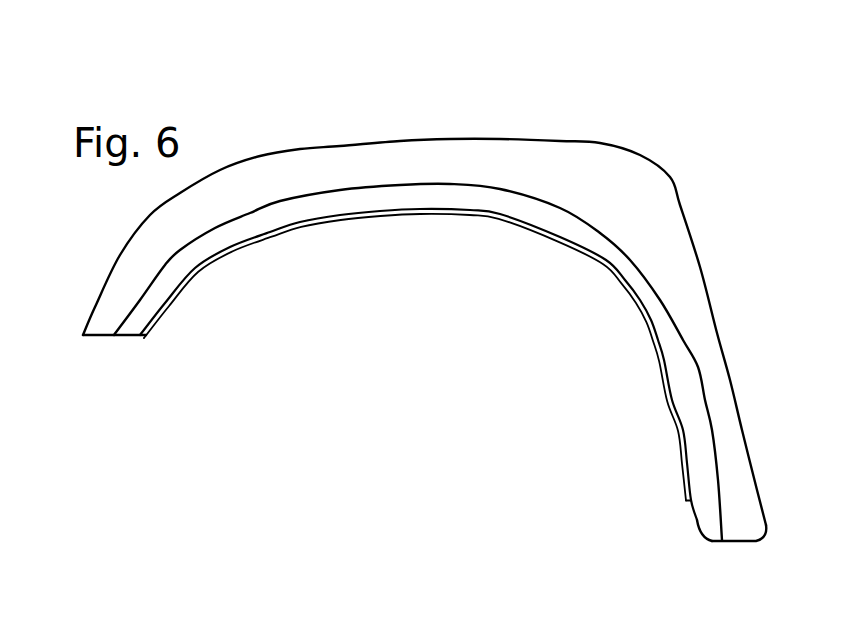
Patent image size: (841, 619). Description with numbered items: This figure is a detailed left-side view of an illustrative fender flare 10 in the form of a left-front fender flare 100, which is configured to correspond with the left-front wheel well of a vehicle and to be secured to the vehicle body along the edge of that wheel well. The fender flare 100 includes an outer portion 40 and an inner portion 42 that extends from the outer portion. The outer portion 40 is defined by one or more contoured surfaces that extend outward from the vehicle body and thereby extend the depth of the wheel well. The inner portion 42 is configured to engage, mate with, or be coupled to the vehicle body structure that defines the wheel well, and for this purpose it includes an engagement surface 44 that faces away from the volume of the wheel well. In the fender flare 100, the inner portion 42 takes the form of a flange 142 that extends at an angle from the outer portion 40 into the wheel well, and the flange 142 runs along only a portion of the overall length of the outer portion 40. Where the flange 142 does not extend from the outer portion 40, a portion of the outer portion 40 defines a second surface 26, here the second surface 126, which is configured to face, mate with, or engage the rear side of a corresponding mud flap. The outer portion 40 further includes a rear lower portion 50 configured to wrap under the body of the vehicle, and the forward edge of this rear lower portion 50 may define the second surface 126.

The fender flare 10 is at (554, 50).
The left-front fender flare 100 is at (588, 85).
The outer portion 40 is at (653, 126).
The inner portion 42 is at (435, 217).
The flange 142 is at (337, 226).
The engagement surface 44 is at (682, 407).
The second surface 126 is at (696, 510).
The second surface 26 is at (695, 521).
The rear lower portion 50 is at (734, 548).